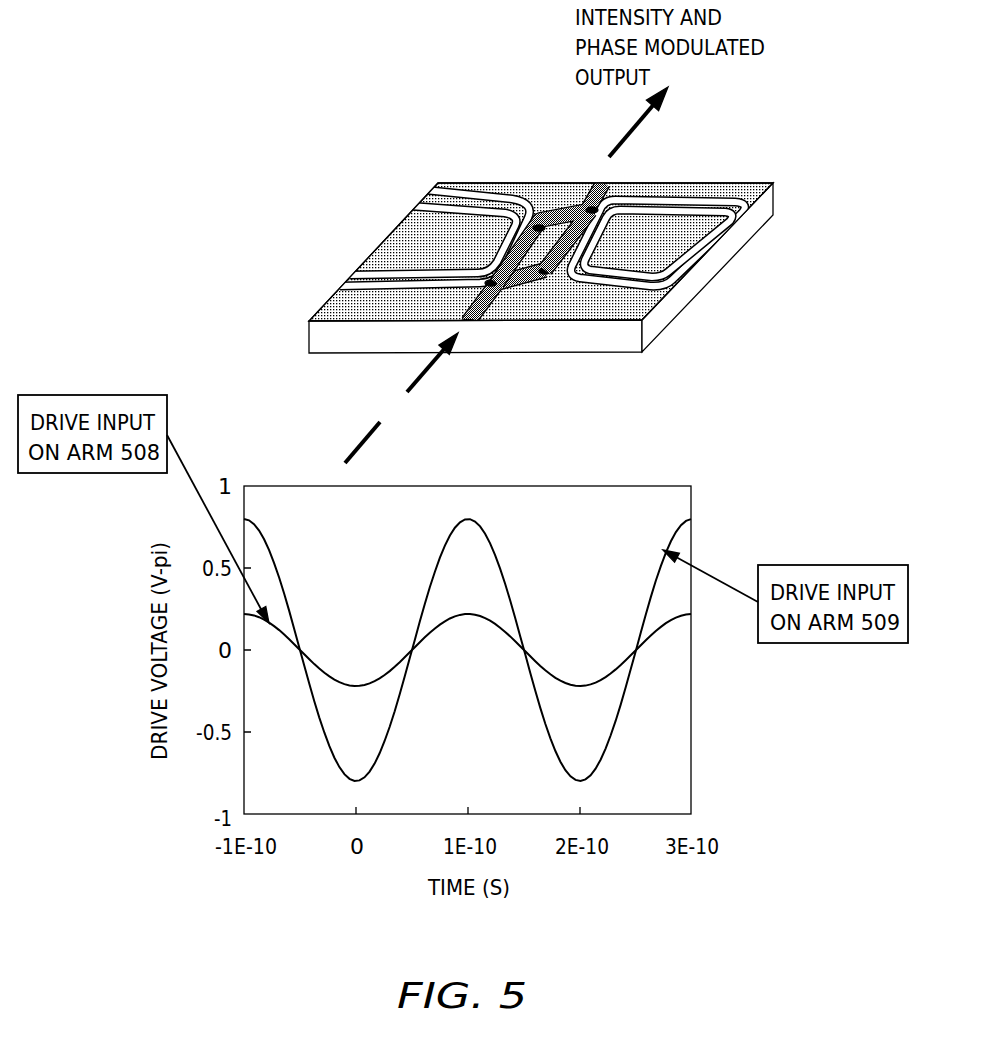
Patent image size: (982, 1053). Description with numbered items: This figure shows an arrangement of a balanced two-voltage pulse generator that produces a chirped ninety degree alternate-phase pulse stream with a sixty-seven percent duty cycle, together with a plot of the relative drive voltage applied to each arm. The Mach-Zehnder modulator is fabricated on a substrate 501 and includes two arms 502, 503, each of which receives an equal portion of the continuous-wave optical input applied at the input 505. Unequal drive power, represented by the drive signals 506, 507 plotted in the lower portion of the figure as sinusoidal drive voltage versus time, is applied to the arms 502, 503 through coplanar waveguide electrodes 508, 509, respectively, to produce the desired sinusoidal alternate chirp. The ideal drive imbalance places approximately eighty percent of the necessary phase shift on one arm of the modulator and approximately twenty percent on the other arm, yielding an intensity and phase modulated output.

The substrate 501 is at (773, 199).
The arm 502 is at (548, 210).
The arm 503 is at (522, 292).
The input 505 is at (358, 452).
The drive signal 506 is at (353, 680).
The drive signal 507 is at (463, 615).
The coplanar waveguide electrode 508 is at (428, 200).
The coplanar waveguide electrode 509 is at (733, 215).